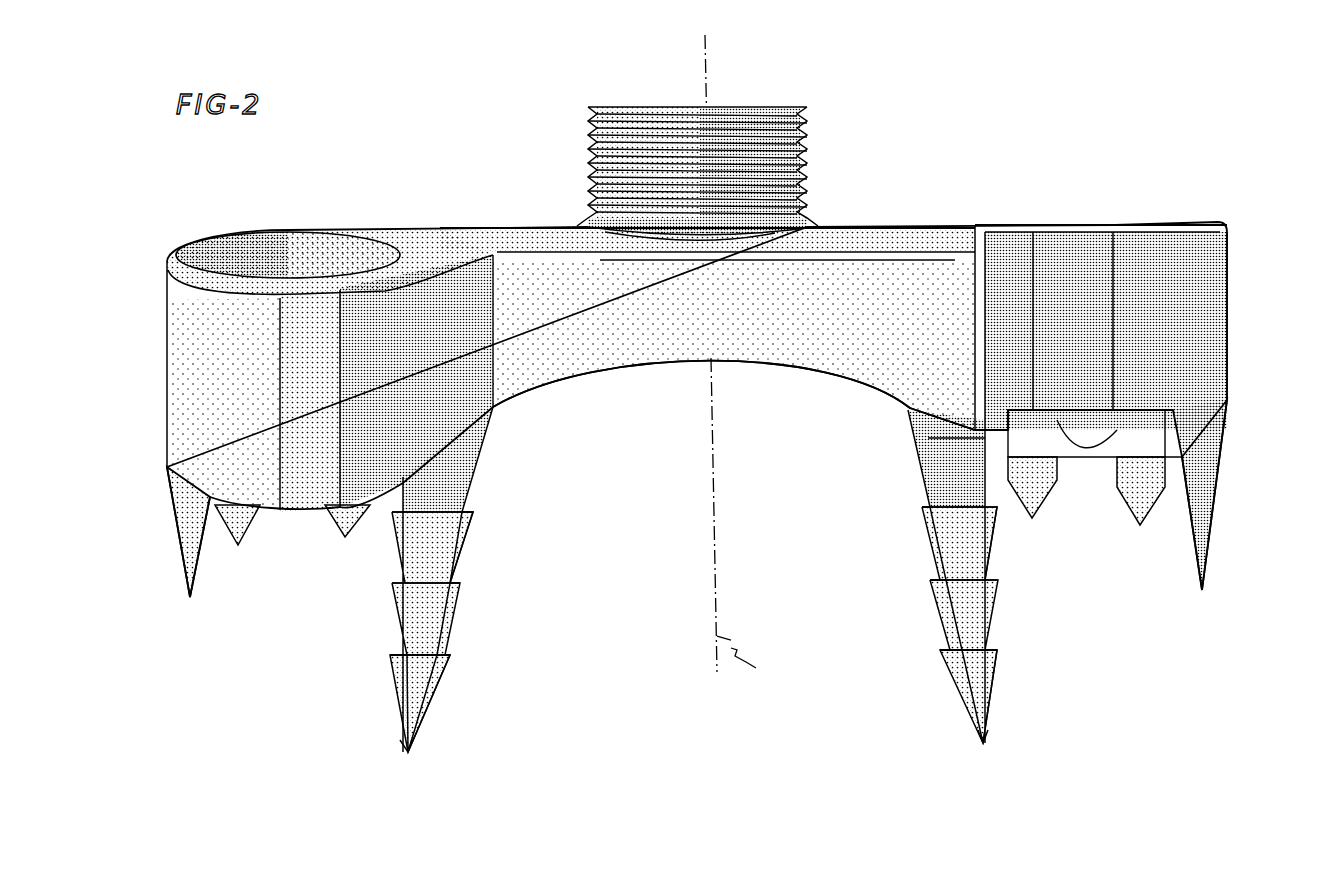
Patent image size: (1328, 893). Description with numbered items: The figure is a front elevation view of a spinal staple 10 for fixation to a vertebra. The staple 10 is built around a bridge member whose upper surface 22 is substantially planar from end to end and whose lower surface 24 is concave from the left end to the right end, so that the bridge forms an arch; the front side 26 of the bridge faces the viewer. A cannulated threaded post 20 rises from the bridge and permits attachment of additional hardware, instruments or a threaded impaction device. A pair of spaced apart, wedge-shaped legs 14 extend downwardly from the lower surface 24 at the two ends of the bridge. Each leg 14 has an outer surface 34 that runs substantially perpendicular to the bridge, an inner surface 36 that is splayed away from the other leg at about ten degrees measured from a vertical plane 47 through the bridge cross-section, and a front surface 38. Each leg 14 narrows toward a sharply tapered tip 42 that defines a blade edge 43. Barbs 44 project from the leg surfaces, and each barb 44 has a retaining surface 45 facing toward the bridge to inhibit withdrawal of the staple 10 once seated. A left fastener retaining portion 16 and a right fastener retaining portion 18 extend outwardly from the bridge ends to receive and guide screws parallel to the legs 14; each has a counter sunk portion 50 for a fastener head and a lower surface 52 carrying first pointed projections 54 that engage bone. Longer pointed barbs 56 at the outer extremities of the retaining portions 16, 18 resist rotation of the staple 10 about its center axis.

The spinal staple 10 is at (1000, 168).
The leg 14 is at (398, 610).
The left fastener retaining portion 16 is at (328, 250).
The right fastener retaining portion 18 is at (1227, 256).
The threaded post 20 is at (640, 122).
The upper surface 22 is at (874, 216).
The lower surface 24 is at (717, 368).
The front side 26 is at (840, 346).
The outer surface 34 is at (1040, 500).
The inner surface 36 is at (458, 574).
The front surface 38 is at (395, 650).
The tip 42 is at (420, 716).
The blade edge 43 is at (410, 753).
The barb 44 is at (470, 524).
The retaining surface 45 is at (480, 510).
The vertical plane 47 is at (757, 658).
The counter sunk portion 50 is at (220, 246).
The lower surface 52 is at (1089, 468).
The first pointed projection 54 is at (1135, 502).
The pointed barb 56 is at (198, 578).